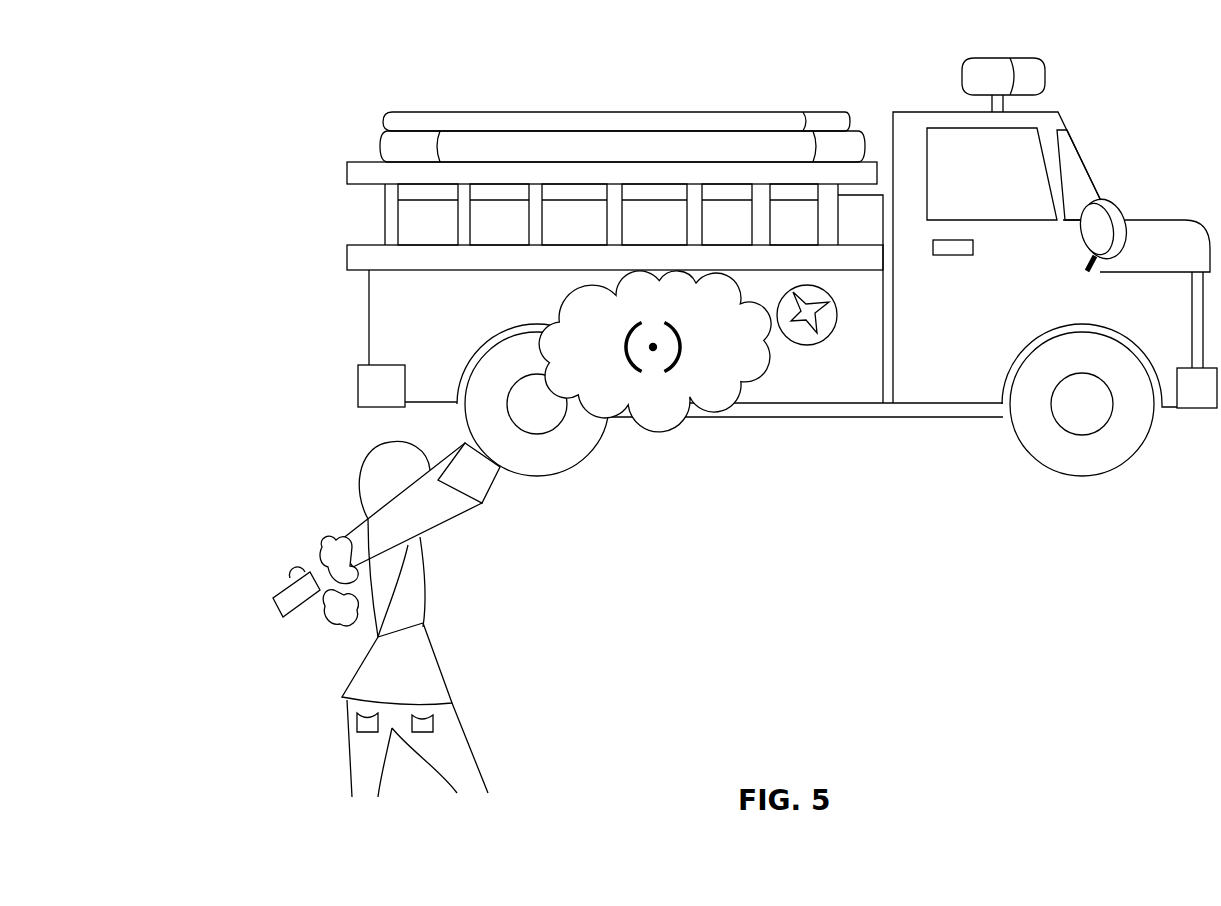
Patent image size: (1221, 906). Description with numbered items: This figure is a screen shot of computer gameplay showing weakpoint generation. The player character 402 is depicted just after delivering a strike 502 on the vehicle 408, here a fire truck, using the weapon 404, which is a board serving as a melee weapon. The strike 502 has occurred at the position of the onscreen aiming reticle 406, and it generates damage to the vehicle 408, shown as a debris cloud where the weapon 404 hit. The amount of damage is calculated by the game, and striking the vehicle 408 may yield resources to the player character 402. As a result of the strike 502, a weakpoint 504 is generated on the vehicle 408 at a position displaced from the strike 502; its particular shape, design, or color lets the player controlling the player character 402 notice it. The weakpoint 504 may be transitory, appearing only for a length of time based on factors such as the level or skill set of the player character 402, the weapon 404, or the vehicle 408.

The player character 402 is at (332, 633).
The weapon 404 is at (458, 520).
The aiming reticle 406 is at (673, 377).
The vehicle 408 is at (540, 112).
The strike 502 is at (732, 407).
The weakpoint 504 is at (823, 348).